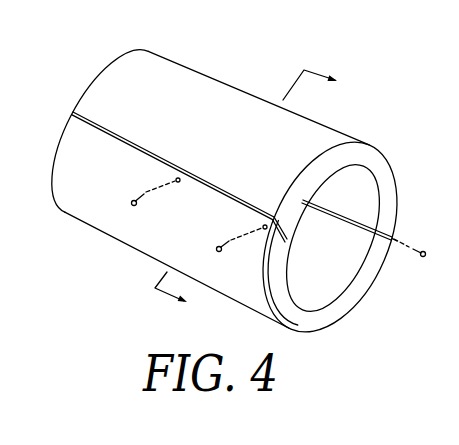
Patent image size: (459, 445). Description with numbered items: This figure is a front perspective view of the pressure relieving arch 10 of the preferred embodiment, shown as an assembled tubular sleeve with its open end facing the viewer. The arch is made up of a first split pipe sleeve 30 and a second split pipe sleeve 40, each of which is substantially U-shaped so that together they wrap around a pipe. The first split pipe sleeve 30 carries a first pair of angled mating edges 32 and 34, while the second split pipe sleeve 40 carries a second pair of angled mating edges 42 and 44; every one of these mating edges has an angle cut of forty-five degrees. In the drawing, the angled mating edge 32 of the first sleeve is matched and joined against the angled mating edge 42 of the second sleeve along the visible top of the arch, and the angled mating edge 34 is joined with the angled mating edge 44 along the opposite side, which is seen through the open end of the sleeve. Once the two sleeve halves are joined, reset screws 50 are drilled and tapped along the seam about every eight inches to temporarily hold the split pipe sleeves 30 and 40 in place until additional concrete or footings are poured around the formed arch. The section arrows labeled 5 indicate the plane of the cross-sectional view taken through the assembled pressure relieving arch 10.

The pressure relieving arch 10 is at (209, 50).
The section line 5- 5 is at (253, 195).
The first split pipe sleeve 30 is at (284, 144).
The second split pipe sleeve 40 is at (150, 238).
The angled mating edge 32 is at (203, 191).
The angled mating edge 42 is at (233, 184).
The angled mating edge 34 is at (342, 238).
The angled mating edge 44 is at (322, 201).
The reset screw 50 is at (142, 193).